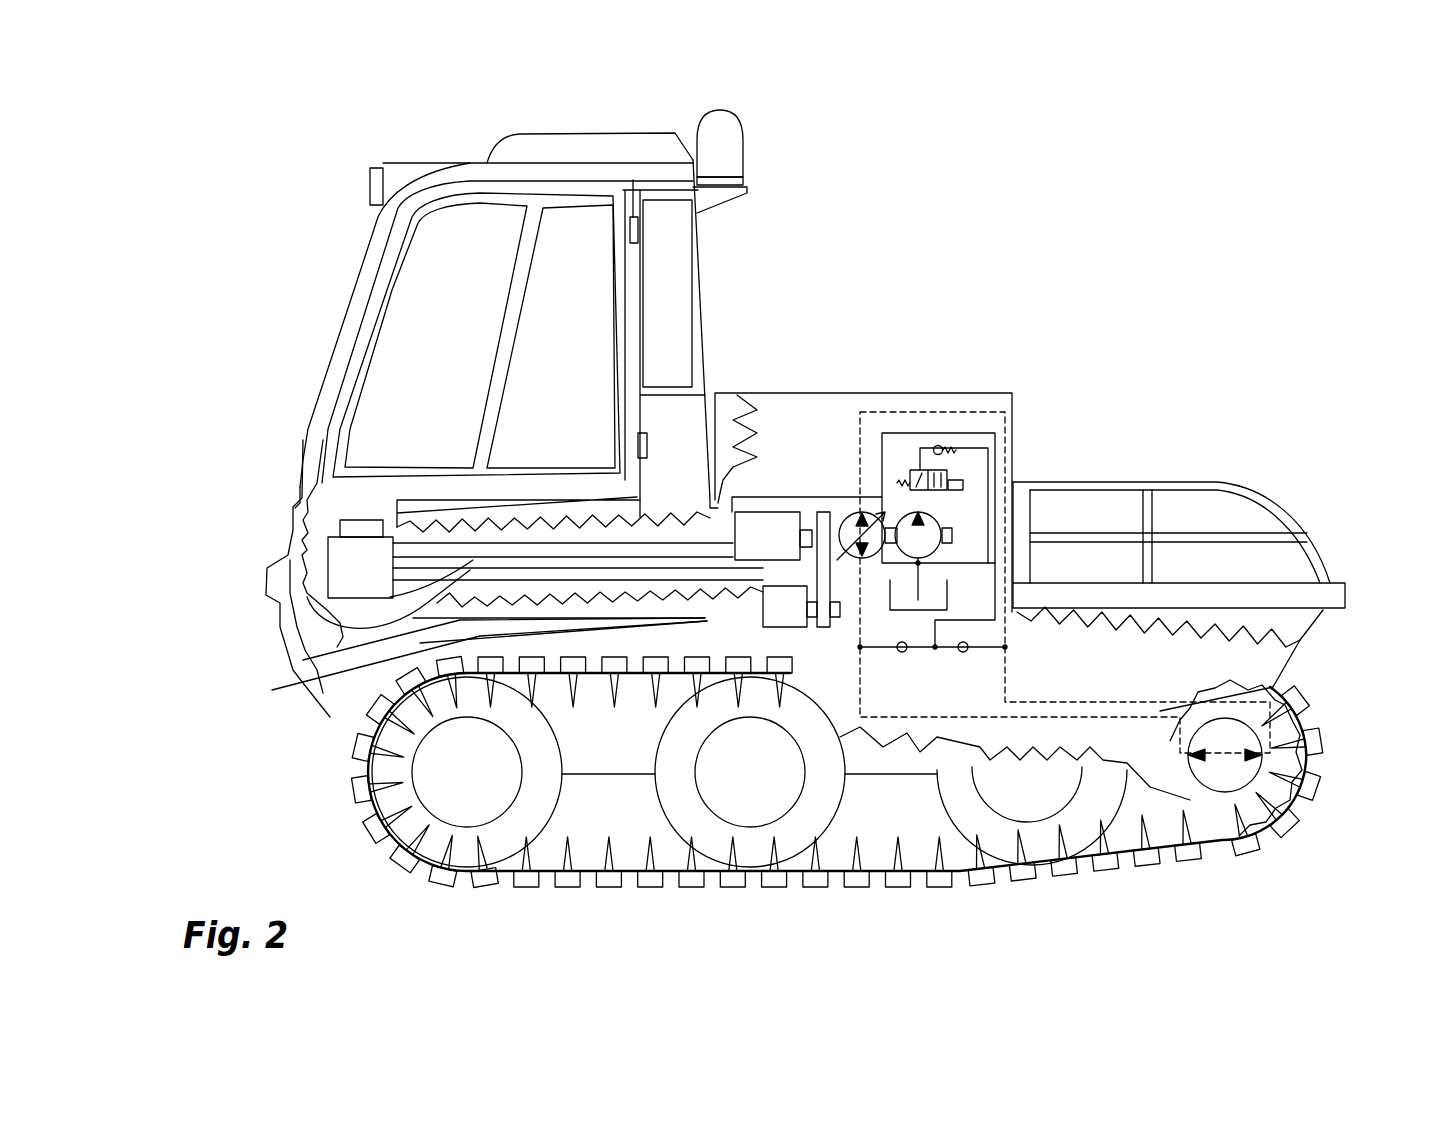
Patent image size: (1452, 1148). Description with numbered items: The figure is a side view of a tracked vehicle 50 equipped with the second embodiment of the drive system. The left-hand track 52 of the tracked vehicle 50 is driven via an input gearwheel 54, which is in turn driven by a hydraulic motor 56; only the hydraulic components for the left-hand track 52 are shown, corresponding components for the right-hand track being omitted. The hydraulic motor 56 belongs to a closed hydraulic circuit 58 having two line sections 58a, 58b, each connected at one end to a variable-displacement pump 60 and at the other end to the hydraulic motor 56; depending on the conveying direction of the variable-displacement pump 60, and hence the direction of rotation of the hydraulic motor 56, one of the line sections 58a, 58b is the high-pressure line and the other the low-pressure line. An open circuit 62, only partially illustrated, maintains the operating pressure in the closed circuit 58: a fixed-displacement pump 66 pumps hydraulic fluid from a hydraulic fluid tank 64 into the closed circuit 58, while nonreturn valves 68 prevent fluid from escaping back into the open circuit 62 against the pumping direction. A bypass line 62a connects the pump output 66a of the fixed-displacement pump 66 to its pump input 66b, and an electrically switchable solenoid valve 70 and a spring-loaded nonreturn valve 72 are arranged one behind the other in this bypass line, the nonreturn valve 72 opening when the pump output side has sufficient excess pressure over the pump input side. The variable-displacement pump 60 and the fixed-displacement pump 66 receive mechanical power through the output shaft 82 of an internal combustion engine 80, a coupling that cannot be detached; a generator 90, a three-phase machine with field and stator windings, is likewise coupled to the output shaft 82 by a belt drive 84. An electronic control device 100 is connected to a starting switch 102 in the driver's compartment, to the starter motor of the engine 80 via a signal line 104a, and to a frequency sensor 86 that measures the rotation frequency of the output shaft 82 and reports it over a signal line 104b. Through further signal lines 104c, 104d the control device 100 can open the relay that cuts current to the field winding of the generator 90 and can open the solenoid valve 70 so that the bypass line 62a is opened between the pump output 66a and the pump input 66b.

The tracked vehicle 50 is at (335, 300).
The left-hand track 52 is at (360, 808).
The input gearwheel 54 is at (1295, 815).
The hydraulic motor 56 is at (1227, 755).
The closed hydraulic circuit 58 is at (1128, 680).
The line section 58a is at (1163, 711).
The line section 58b is at (1276, 697).
The variable-displacement pump 60 is at (855, 558).
The open circuit 62 is at (967, 573).
The bypass line 62a is at (993, 513).
The hydraulic fluid tank 64 is at (898, 614).
The fixed-displacement pump 66 is at (900, 527).
The pump output 66a is at (906, 535).
The pump input 66b is at (917, 515).
The nonreturn valves 68 is at (902, 652).
The solenoid valve 70 is at (953, 480).
The spring-loaded nonreturn valve 72 is at (942, 449).
The internal combustion engine 80 is at (770, 525).
The output shaft 82 is at (822, 548).
The belt drive 84 is at (813, 600).
The frequency sensor 86 is at (806, 540).
The generator 90 is at (782, 605).
The electronic control device 100 is at (355, 565).
The starting switch 102 is at (357, 517).
The signal line 104a is at (520, 600).
The signal line 104b is at (480, 638).
The signal line 104c is at (480, 660).
The signal line 104d is at (540, 568).